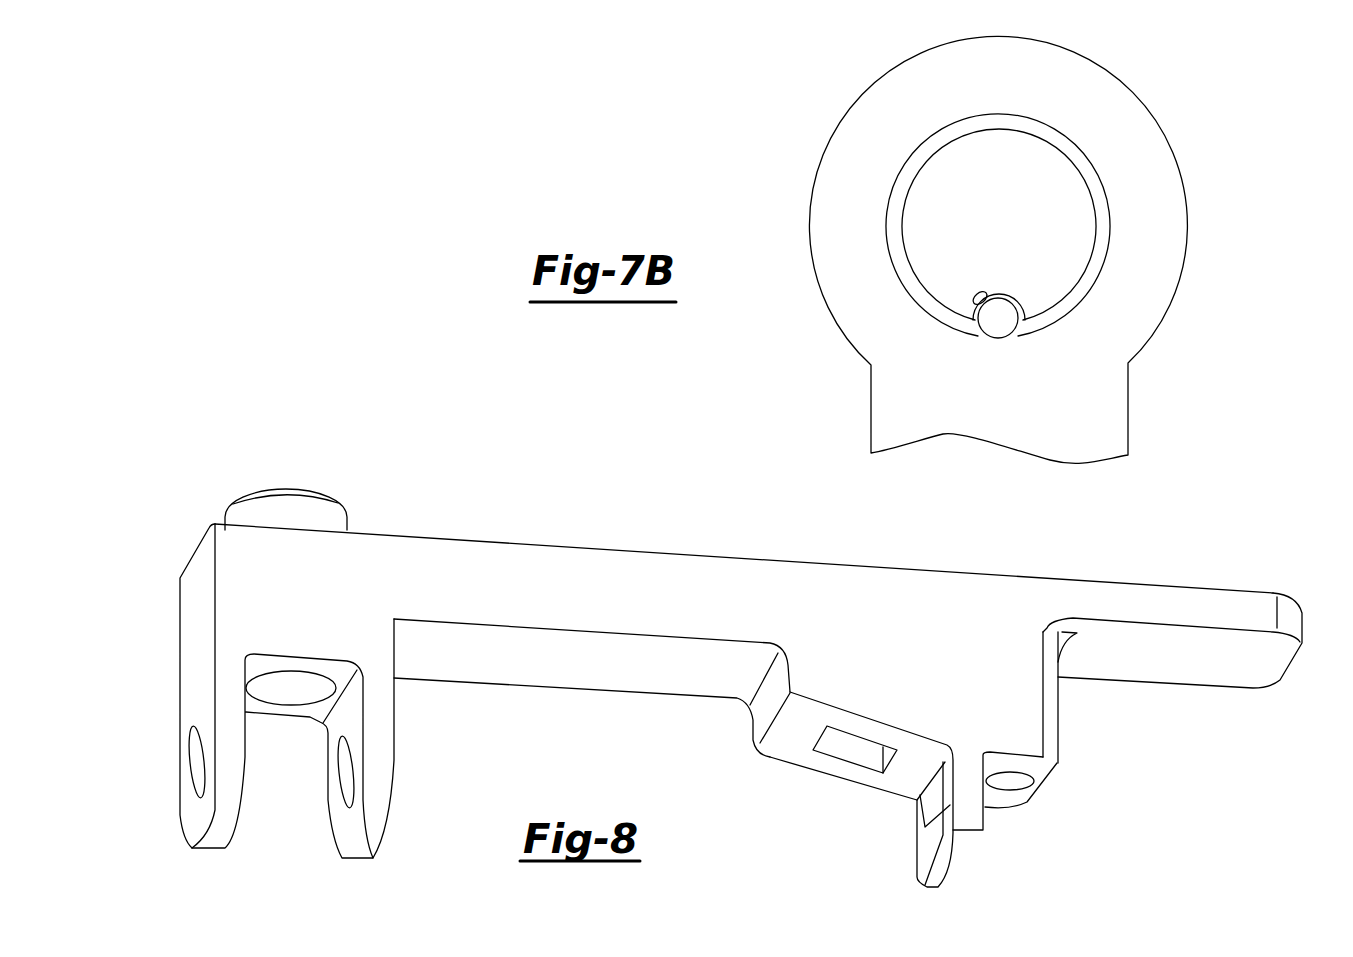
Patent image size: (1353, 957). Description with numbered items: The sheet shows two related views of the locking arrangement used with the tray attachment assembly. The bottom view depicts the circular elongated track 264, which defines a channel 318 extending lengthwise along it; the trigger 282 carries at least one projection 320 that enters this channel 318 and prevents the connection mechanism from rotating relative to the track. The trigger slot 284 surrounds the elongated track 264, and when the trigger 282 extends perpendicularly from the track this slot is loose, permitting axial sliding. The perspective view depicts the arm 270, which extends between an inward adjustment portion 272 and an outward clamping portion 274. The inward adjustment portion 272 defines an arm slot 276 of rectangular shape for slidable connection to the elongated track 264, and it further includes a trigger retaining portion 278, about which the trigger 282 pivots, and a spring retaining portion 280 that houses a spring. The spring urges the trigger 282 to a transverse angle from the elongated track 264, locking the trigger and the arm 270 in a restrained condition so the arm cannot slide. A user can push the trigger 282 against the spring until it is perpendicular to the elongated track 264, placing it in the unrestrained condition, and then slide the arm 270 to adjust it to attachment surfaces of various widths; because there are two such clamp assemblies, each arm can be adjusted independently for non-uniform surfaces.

In FIG. 7B, the elongated track 264 is at (1009, 243).
In FIG. 8, the arm 270 is at (220, 468).
In FIG. 8, the inward adjustment portion 272 is at (1238, 612).
In FIG. 8, the outward clamping portion 274 is at (258, 617).
In FIG. 8, the arm slot 276 is at (833, 737).
In FIG. 8, the trigger retaining portion 278 is at (930, 808).
In FIG. 8, the spring retaining portion 280 is at (1012, 782).
In FIG. 7B, the trigger 282 is at (1140, 408).
In FIG. 7B, the trigger slot 284 is at (1104, 222).
In FIG. 7B, the channel 318 is at (976, 300).
In FIG. 7B, the projection 320 is at (998, 323).